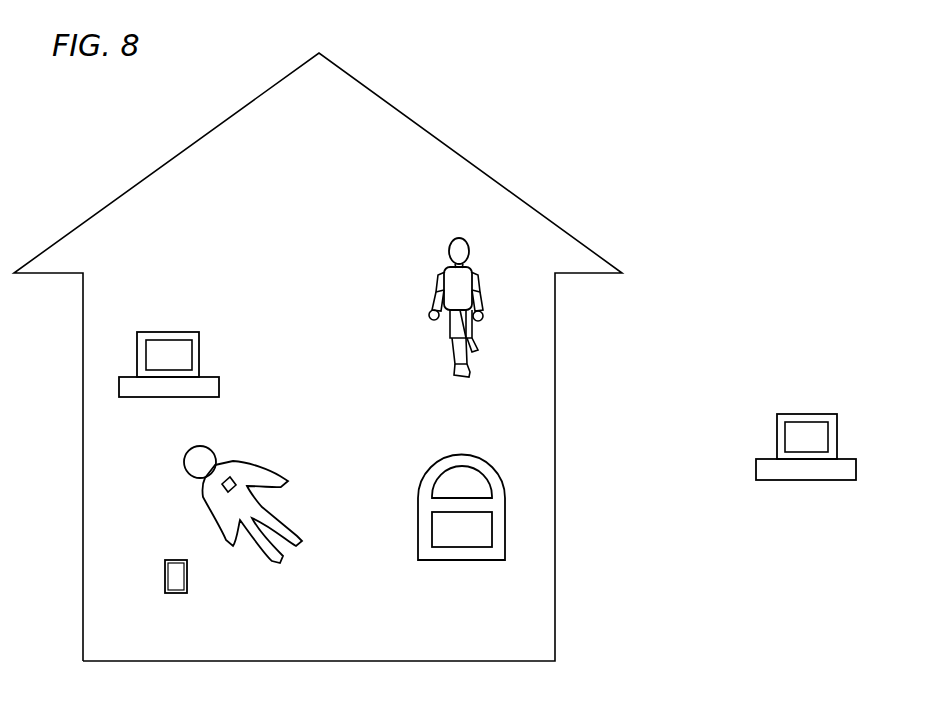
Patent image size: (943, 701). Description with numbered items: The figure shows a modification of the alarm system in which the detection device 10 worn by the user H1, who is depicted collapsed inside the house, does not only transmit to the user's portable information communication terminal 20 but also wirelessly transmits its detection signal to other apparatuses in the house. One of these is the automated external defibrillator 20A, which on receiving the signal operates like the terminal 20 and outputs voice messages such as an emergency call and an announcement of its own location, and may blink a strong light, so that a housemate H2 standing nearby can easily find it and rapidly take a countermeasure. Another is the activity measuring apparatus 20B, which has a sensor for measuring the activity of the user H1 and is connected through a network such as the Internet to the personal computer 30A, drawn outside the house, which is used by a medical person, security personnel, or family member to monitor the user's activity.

The detection device 10 is at (237, 478).
The portable information communication terminal 20 is at (187, 580).
The automated external defibrillator 20A is at (489, 460).
The activity measuring apparatus 20B is at (183, 332).
The personal computer 30A is at (811, 414).
The user H1 is at (183, 463).
The housemate H2 is at (451, 245).